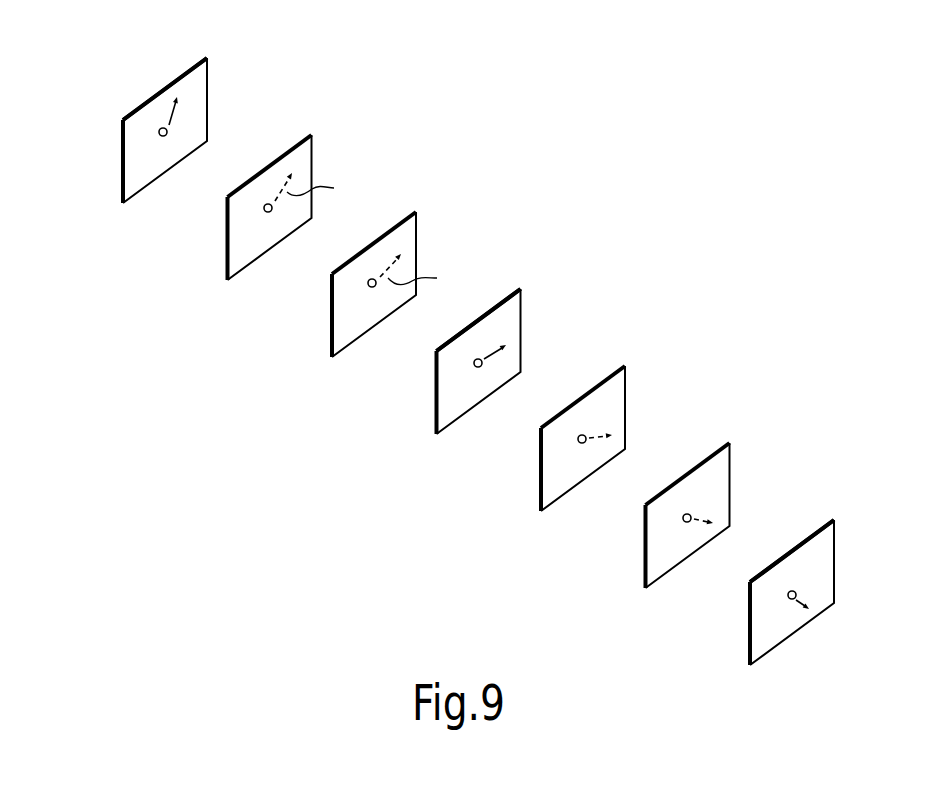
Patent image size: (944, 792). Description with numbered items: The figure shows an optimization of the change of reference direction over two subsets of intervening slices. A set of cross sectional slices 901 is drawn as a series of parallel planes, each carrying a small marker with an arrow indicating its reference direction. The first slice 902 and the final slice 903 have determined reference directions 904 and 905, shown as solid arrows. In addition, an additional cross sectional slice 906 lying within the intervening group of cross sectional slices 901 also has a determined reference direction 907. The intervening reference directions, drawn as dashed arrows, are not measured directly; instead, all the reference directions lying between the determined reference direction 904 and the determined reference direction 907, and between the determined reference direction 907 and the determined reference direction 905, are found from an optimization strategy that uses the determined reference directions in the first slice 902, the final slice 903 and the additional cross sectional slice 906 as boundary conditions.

The cross sectional slices 901 is at (122, 182).
The first slice 902 is at (183, 72).
The final slice 903 is at (822, 522).
The determined reference direction 904 is at (173, 117).
The determined reference direction 905 is at (799, 604).
The additional cross sectional slice 906 is at (497, 302).
The determined reference direction 907 is at (497, 356).